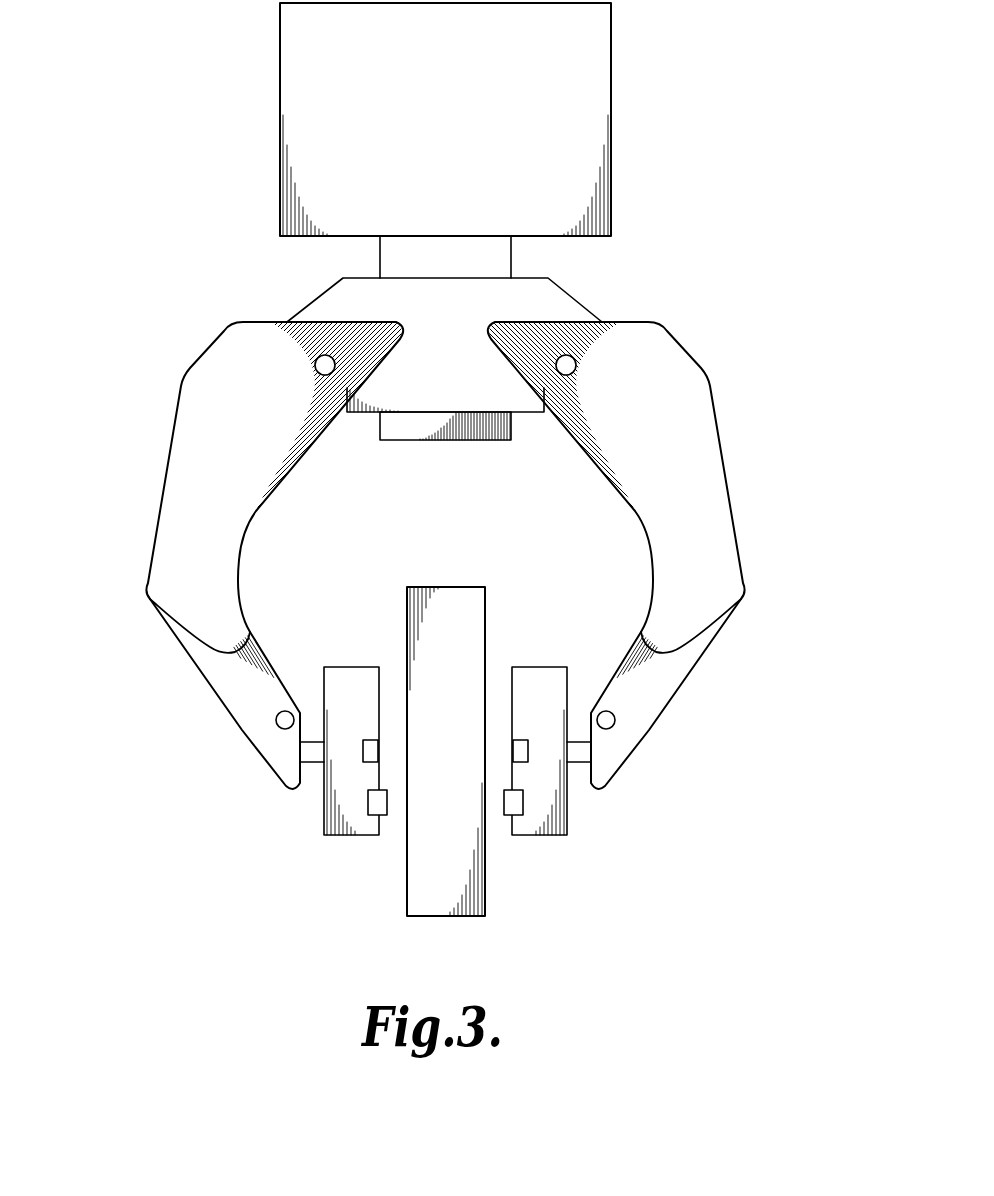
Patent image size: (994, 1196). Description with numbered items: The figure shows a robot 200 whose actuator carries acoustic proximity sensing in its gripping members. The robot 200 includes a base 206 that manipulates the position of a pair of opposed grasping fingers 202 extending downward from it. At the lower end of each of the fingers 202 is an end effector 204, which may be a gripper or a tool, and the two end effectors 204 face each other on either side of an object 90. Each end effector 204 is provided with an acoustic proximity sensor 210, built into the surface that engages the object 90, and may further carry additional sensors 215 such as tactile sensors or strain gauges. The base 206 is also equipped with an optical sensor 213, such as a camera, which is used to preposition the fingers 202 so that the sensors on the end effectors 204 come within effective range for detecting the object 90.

The robot 200 is at (166, 256).
The base 206 is at (608, 103).
The optical sensor 213 is at (452, 441).
The grasping fingers 202 is at (140, 579).
The end effectors 204 is at (349, 674).
The acoustic proximity sensor 210 is at (368, 750).
The additional sensors 215 is at (373, 812).
The object 90 is at (411, 882).